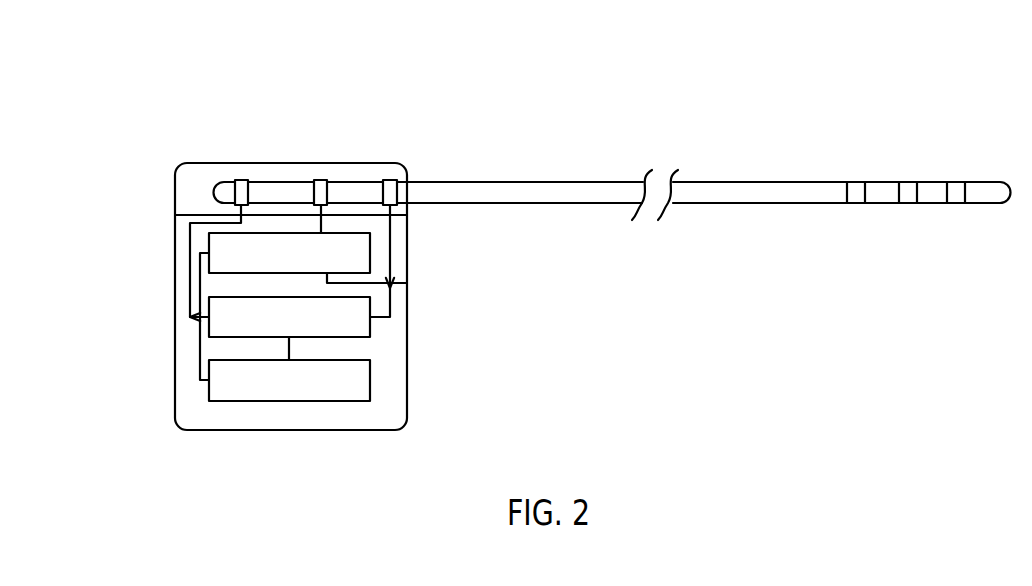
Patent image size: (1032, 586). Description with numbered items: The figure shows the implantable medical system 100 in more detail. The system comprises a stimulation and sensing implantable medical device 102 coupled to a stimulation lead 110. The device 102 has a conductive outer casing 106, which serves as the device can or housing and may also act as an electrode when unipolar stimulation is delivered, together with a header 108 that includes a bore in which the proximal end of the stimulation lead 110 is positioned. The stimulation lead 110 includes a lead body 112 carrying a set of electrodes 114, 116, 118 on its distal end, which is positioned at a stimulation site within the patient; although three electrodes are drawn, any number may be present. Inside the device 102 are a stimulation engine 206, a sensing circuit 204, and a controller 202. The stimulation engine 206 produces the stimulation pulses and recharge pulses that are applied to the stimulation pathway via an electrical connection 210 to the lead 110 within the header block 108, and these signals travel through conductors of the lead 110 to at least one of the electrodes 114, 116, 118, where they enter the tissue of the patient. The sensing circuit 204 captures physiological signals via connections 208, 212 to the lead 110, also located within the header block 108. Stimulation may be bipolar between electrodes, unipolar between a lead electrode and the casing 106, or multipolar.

The implantable medical system 100 is at (147, 113).
The stimulation and sensing implantable medical device 102 is at (173, 277).
The conductive outer casing 106 is at (209, 420).
The header 108 is at (202, 163).
The stimulation lead 110 is at (709, 211).
The lead body 112 is at (587, 193).
The electrode 114 is at (855, 203).
The electrode 116 is at (907, 203).
The electrode 118 is at (955, 203).
The controller 202 is at (370, 380).
The sensing circuit 204 is at (370, 328).
The stimulation engine 206 is at (370, 252).
The connection 208 is at (242, 180).
The electrical connection 210 is at (321, 180).
The connection 212 is at (391, 180).